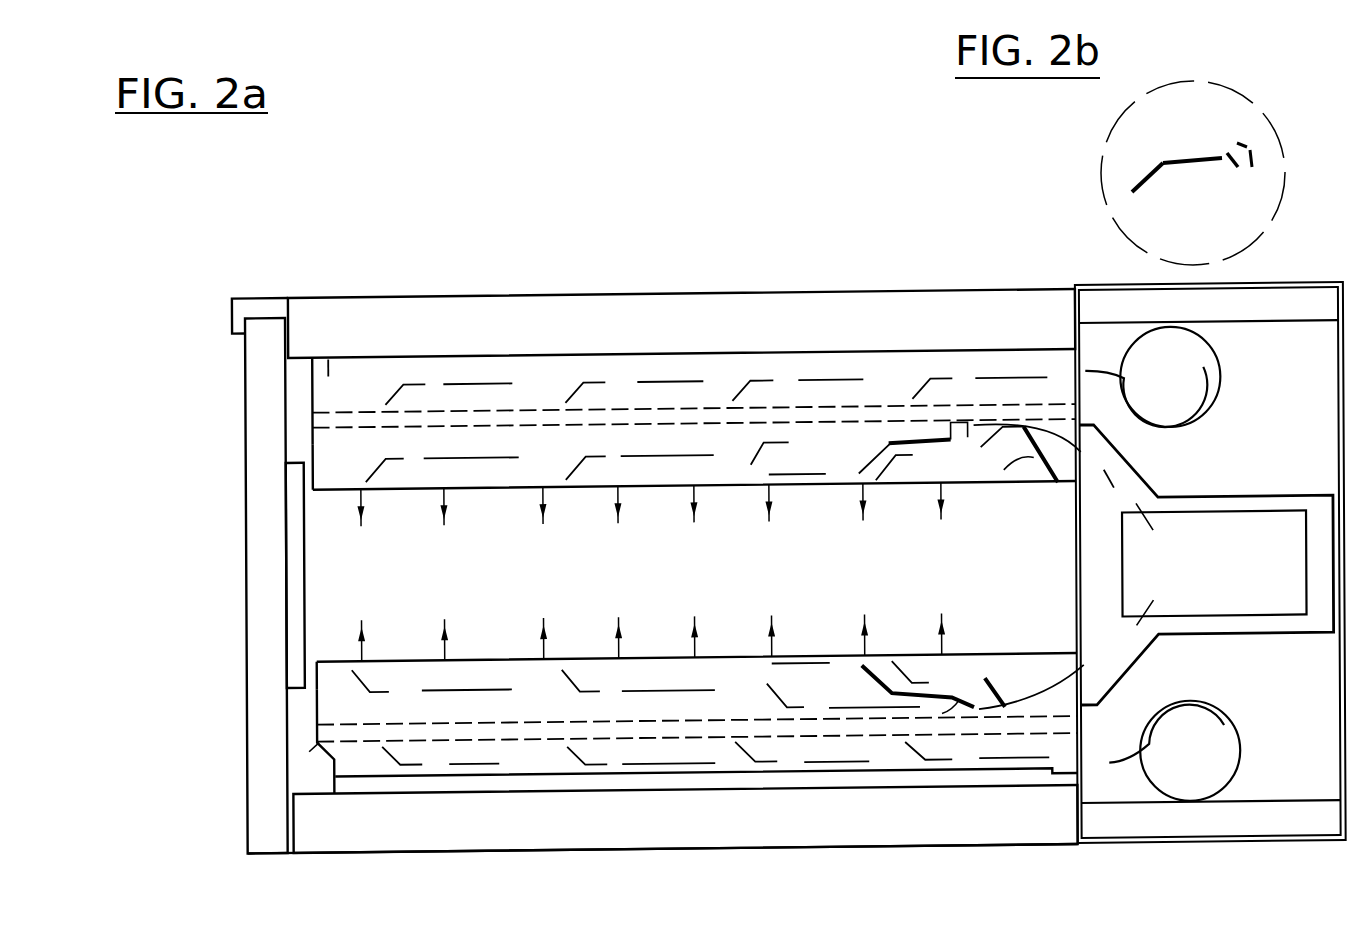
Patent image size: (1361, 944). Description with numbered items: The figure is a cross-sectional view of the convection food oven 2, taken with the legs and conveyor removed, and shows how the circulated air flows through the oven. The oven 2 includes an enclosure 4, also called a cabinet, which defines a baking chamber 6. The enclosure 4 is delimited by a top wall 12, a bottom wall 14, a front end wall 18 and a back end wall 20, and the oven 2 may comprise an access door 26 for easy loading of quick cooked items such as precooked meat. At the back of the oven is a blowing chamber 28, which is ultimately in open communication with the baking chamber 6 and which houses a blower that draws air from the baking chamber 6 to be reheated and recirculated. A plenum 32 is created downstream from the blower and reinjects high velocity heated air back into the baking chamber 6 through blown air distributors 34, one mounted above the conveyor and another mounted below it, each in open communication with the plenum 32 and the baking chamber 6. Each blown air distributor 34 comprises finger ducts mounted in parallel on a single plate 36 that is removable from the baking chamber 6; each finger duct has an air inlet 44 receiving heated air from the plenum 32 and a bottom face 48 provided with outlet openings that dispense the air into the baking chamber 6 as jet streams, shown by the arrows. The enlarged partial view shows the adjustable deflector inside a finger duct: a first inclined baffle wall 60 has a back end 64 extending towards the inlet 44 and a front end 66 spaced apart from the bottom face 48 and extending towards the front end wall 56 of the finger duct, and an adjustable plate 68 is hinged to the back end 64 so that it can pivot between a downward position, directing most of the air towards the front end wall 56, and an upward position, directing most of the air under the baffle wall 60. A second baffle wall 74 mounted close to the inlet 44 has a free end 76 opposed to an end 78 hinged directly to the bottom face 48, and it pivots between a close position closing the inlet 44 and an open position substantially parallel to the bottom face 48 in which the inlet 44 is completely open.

In FIG. 2a, the convection food oven 2 is at (888, 172).
In FIG. 2a, the enclosure 4 is at (558, 291).
In FIG. 2a, the baking chamber 6 is at (582, 587).
In FIG. 2a, the top wall 12 is at (792, 300).
In FIG. 2a, the bottom wall 14 is at (470, 845).
In FIG. 2a, the front end wall 18 is at (260, 514).
In FIG. 2a, the back end wall 20 is at (1075, 597).
In FIG. 2a, the access door 26 is at (292, 618).
In FIG. 2a, the blowing chamber 28 is at (1240, 428).
In FIG. 2a, the plenum 32 is at (1188, 587).
In FIG. 2a, the blown air distributor 34 is at (307, 420).
In FIG. 2a, the plate 36 is at (393, 494).
In FIG. 2a, the air inlet 44 is at (1042, 492).
In FIG. 2a, the bottom face 48 is at (718, 489).
In FIG. 2a, the front end wall 56 is at (312, 463).
In FIG. 2b, the first inclined baffle wall 60 is at (1167, 167).
In FIG. 2b, the back end 64 is at (1220, 160).
In FIG. 2b, the front end 66 is at (1127, 205).
In FIG. 2b, the adjustable plate 68 is at (1233, 170).
In FIG. 2a, the second baffle wall 74 is at (1077, 471).
In FIG. 2a, the free end 76 is at (993, 458).
In FIG. 2a, the hinged end 78 is at (1080, 482).